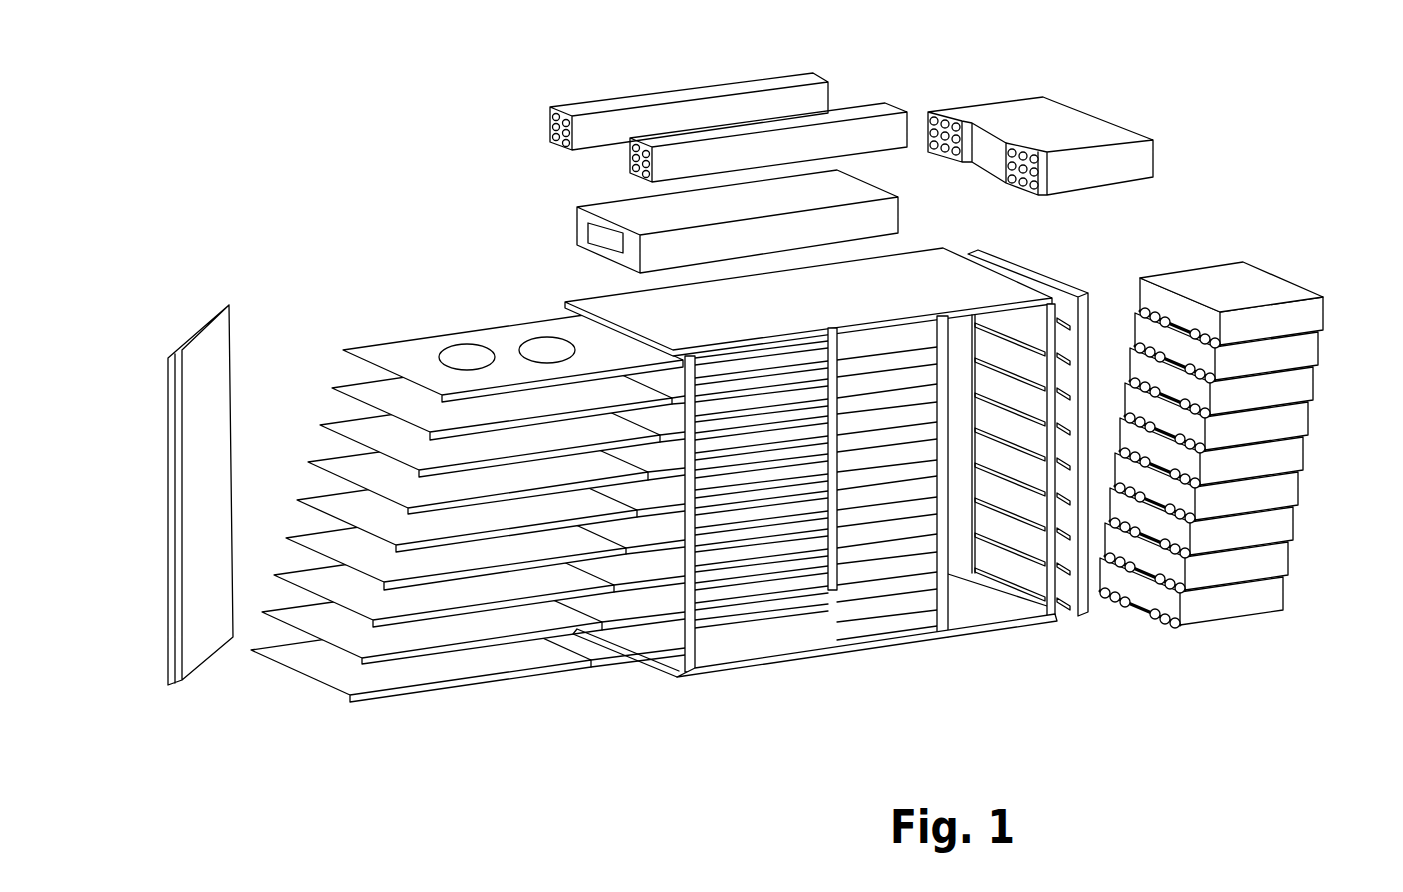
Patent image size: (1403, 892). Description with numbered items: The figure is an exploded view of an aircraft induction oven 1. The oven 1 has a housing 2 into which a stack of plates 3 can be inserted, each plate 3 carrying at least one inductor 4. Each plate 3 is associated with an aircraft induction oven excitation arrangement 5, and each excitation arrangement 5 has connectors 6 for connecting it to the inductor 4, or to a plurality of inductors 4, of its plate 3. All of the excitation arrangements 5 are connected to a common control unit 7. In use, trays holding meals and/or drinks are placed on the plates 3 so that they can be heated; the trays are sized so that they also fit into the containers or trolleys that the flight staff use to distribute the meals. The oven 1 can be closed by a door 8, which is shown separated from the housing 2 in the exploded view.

The aircraft induction oven 1 is at (745, 463).
The housing 2 is at (912, 647).
The plates 3 is at (510, 688).
The inductor 4 is at (458, 347).
The aircraft induction oven excitation arrangement 5 is at (1152, 620).
The connectors 6 is at (1177, 625).
The common control unit 7 is at (622, 213).
The door 8 is at (206, 636).